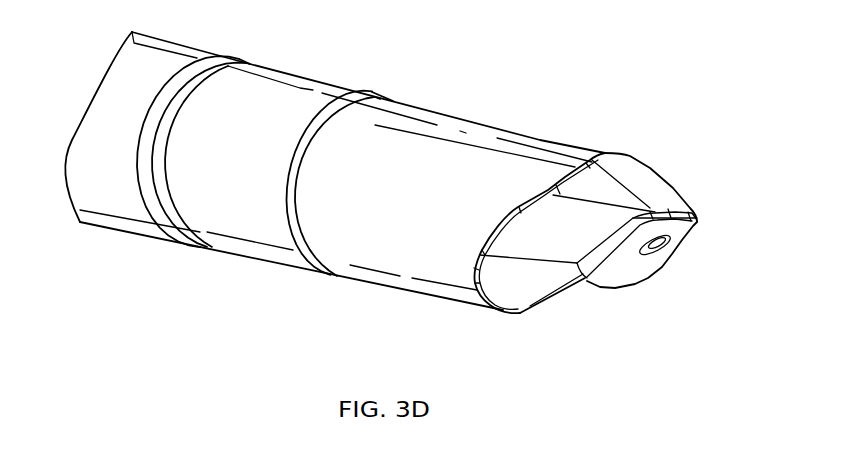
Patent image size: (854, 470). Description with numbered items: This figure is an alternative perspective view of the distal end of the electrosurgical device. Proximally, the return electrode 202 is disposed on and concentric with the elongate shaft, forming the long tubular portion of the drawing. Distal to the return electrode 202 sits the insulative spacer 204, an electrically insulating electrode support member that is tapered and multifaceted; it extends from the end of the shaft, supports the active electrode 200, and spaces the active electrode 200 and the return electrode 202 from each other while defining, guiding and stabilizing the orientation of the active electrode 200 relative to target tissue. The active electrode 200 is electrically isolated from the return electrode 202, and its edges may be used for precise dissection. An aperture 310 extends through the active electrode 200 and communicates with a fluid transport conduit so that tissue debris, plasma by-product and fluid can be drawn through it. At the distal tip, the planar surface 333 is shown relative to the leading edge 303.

The return electrode 202 is at (390, 258).
The insulative spacer 204 is at (528, 288).
The active electrode 200 is at (604, 237).
The aperture 310 is at (660, 247).
The leading edge 303 is at (673, 208).
The planar surface 333 is at (633, 182).